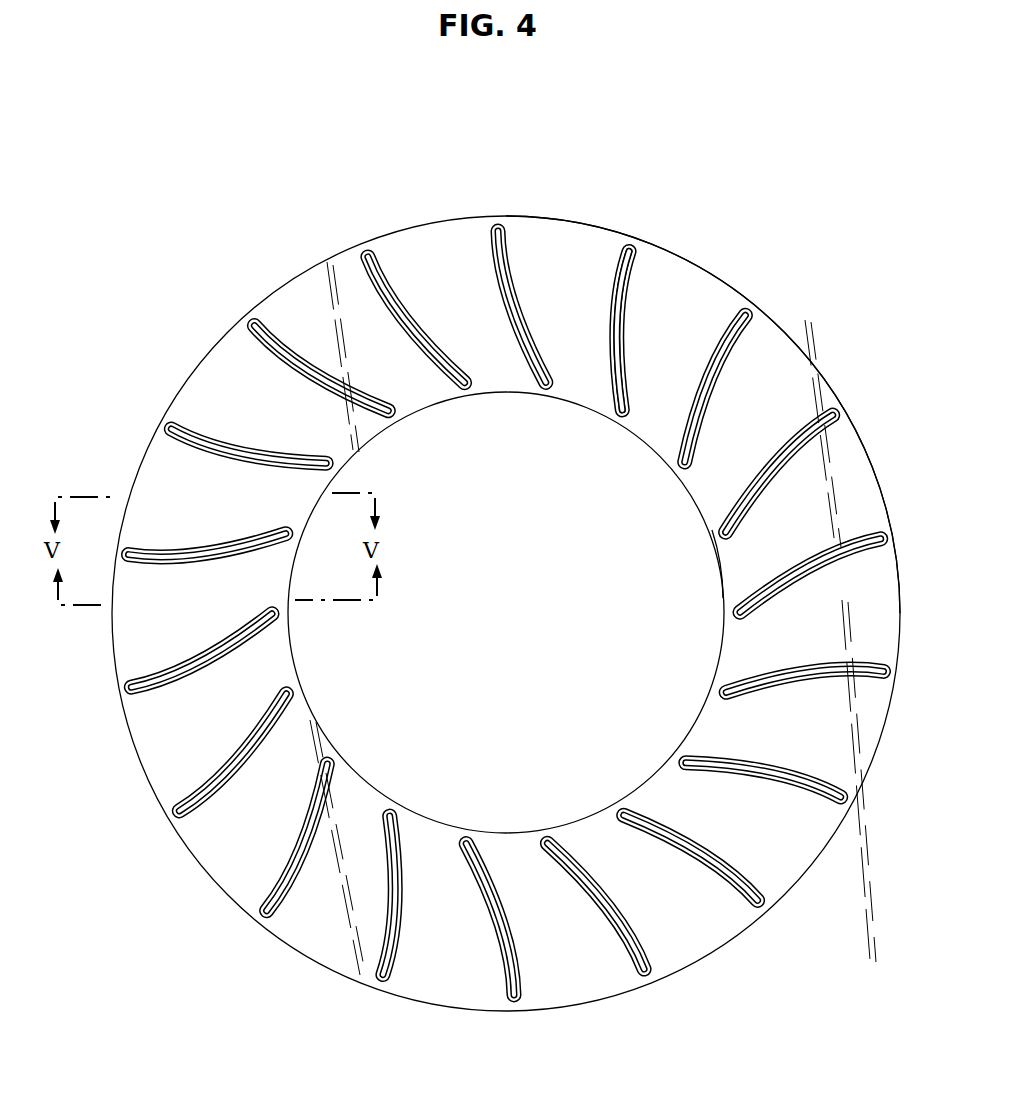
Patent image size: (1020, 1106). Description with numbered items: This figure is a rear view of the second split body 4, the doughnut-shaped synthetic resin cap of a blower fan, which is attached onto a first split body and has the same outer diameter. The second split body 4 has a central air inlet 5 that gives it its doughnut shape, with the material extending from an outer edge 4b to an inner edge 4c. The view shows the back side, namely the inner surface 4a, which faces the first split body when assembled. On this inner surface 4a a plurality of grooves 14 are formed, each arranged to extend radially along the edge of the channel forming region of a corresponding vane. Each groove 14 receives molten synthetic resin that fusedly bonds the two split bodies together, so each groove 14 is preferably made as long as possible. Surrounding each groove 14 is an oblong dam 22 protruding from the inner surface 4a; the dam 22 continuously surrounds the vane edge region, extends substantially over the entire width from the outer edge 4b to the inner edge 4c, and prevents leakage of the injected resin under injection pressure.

The second split body 4 is at (509, 172).
The inner surface 4a is at (765, 852).
The outer edge 4b is at (846, 402).
The inner edge 4c is at (722, 598).
The air inlet 5 is at (712, 530).
The groove 14 is at (620, 328).
The dam 22 is at (712, 355).